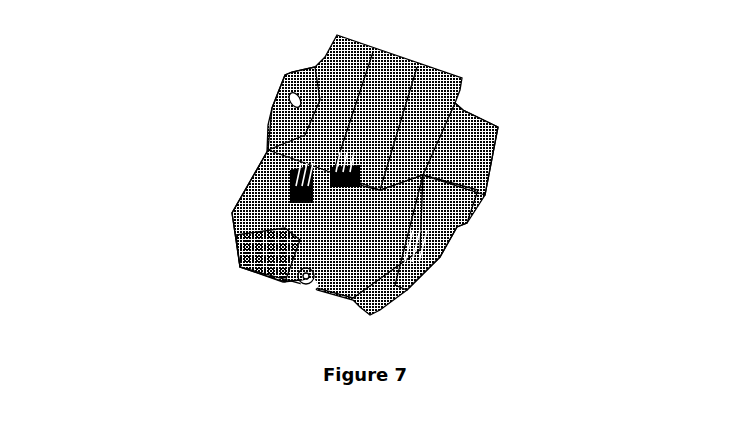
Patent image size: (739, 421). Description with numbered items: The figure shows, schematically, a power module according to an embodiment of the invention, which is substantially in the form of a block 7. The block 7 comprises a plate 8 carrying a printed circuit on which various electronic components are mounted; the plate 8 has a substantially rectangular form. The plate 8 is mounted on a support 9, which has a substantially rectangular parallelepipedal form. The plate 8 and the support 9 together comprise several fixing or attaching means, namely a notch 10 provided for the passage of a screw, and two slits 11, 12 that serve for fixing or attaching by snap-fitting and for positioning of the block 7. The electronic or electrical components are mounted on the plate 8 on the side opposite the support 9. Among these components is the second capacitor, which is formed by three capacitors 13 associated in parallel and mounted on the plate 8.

The block 7 is at (200, 118).
The plate 8 is at (230, 215).
The support 9 is at (233, 260).
The notch 10 is at (297, 283).
The slit 11 is at (478, 208).
The slit 12 is at (278, 90).
The capacitors 13 is at (480, 118).